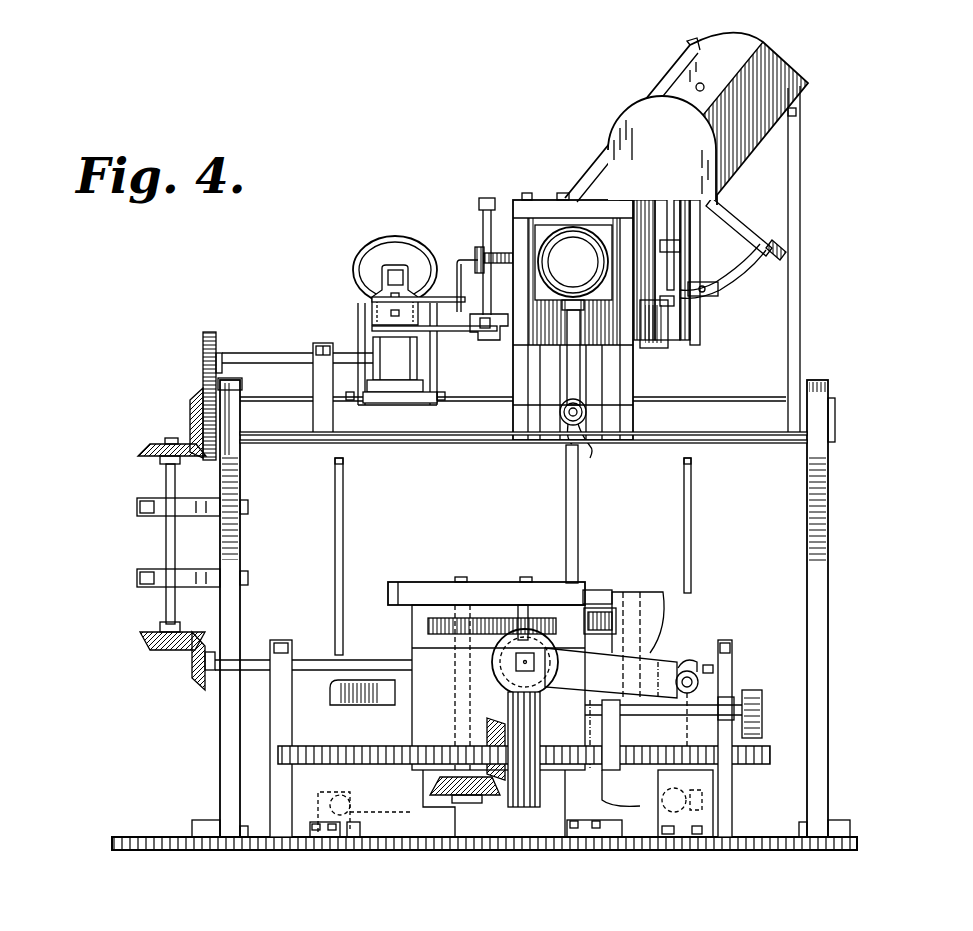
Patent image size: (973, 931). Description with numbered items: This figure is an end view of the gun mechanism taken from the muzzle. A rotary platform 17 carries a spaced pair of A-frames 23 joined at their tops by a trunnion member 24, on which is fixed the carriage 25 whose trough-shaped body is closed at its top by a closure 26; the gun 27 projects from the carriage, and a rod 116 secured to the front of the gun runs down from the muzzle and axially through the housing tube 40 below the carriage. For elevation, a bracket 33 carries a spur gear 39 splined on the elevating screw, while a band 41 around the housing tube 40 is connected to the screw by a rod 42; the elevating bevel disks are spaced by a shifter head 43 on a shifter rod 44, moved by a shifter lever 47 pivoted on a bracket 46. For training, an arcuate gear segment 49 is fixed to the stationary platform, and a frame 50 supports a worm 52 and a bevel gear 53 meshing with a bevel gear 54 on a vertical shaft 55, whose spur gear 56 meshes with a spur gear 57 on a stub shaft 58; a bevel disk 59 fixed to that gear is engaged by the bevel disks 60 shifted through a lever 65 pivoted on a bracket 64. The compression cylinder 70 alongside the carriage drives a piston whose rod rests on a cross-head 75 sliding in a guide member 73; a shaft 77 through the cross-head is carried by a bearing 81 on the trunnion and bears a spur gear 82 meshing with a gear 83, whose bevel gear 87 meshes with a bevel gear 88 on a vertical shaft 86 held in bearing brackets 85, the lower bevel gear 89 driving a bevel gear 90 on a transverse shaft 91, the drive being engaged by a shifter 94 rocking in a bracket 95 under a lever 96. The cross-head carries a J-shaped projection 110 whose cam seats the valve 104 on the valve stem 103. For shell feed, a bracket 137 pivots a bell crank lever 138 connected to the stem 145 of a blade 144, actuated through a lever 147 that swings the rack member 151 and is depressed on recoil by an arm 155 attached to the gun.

The rotary platform 17 is at (872, 837).
The A-frames 23 is at (830, 592).
The trunnion member 24 is at (428, 434).
The carriage 25 is at (603, 334).
The closure 26 is at (541, 206).
The gun 27 is at (591, 240).
The bracket 33 is at (651, 594).
The spur gear 39 is at (614, 621).
The housing tube 40 is at (587, 406).
The band 41 is at (584, 430).
The rod 42 is at (580, 517).
The shifter head 43 is at (652, 674).
The shifter rod 44 is at (730, 660).
The bracket 46 is at (362, 813).
The shifter lever 47 is at (345, 549).
The arcuate gear segment 49 is at (756, 766).
The frame 50 is at (491, 582).
The worm 52 is at (537, 808).
The bevel gear 53 is at (490, 732).
The bevel gear 54 is at (465, 804).
The vertical shaft 55 is at (456, 642).
The spur gear 56 is at (428, 625).
The spur gear 57 is at (606, 600).
The stub shaft 58 is at (532, 610).
The bevel disk 59 is at (548, 640).
The bevel disks 60 is at (492, 663).
The bracket 64 is at (658, 813).
The lever 65 is at (693, 506).
The compression cylinder 70 is at (400, 241).
The guide member 73 is at (433, 390).
The cross-head 75 is at (376, 292).
The shaft 77 is at (259, 352).
The bearing 81 is at (324, 343).
The spur gear 82 is at (213, 332).
The gear 83 is at (242, 388).
The bearing brackets 85 is at (140, 507).
The vertical shaft 86 is at (166, 481).
The bevel gear 87 is at (190, 406).
The bevel gear 88 is at (146, 448).
The bevel gear 89 is at (142, 642).
The bevel gear 90 is at (194, 678).
The transverse shaft 91 is at (265, 660).
The shifter 94 is at (626, 716).
The bracket 95 is at (606, 792).
The lever 96 is at (756, 706).
The valve stem 103 is at (474, 252).
The valve 104 is at (466, 296).
The J-shaped projection 110 is at (455, 262).
The rod 116 is at (566, 366).
The bracket 137 is at (700, 262).
The bell crank lever 138 is at (738, 276).
The blade 144 is at (720, 204).
The stem 145 is at (771, 240).
The lever 147 is at (660, 348).
The rack member 151 is at (670, 195).
The arm 155 is at (712, 294).